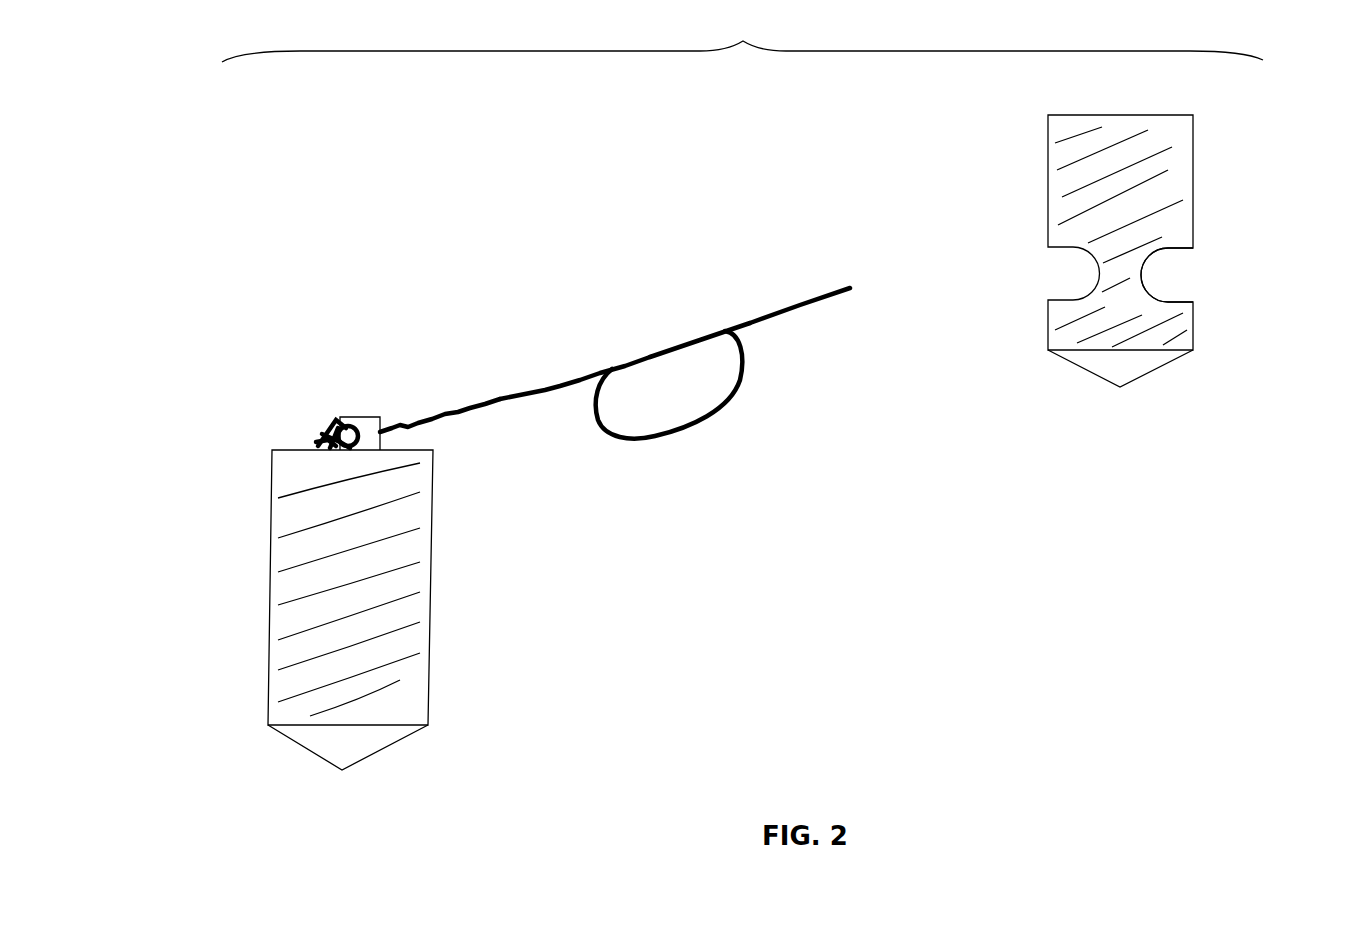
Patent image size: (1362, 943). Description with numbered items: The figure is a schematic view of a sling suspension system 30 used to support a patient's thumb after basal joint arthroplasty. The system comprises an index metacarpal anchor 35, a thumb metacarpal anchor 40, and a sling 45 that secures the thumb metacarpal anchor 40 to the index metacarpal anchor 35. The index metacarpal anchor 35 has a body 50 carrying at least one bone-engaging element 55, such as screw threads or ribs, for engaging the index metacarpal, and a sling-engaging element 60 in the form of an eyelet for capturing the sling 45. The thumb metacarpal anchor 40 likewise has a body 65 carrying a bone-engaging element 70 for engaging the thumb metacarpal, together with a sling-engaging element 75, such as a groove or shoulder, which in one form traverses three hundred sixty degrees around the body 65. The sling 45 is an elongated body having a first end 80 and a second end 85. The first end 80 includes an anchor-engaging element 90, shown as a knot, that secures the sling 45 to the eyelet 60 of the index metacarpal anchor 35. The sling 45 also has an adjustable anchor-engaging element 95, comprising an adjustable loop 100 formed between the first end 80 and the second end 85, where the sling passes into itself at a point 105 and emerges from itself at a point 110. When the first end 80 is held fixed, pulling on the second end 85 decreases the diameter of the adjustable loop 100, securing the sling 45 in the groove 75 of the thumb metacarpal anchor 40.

The sling suspension system 30 is at (742, 39).
The index metacarpal anchor 35 is at (332, 531).
The thumb metacarpal anchor 40 is at (1151, 251).
The sling 45 is at (641, 384).
The body 50 is at (295, 622).
The bone-engaging element 55 is at (380, 608).
The sling-engaging element 60 is at (357, 415).
The body 65 is at (1078, 180).
The bone-engaging element 70 is at (1168, 208).
The sling-engaging element 75 is at (1168, 275).
The first end 80 is at (405, 423).
The second end 85 is at (840, 298).
The anchor-engaging element 90 is at (310, 418).
The adjustable anchor-engaging element 95 is at (669, 451).
The adjustable loop 100 is at (677, 410).
The point 105 is at (627, 347).
The point 110 is at (710, 322).